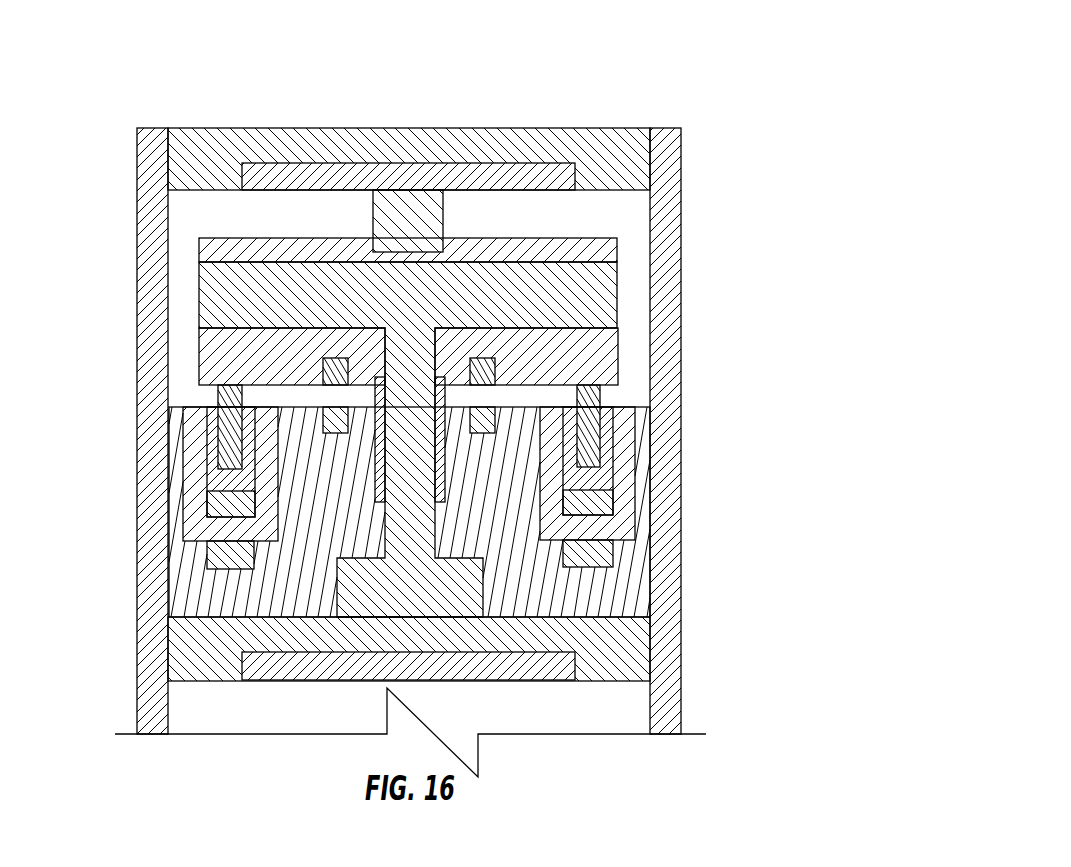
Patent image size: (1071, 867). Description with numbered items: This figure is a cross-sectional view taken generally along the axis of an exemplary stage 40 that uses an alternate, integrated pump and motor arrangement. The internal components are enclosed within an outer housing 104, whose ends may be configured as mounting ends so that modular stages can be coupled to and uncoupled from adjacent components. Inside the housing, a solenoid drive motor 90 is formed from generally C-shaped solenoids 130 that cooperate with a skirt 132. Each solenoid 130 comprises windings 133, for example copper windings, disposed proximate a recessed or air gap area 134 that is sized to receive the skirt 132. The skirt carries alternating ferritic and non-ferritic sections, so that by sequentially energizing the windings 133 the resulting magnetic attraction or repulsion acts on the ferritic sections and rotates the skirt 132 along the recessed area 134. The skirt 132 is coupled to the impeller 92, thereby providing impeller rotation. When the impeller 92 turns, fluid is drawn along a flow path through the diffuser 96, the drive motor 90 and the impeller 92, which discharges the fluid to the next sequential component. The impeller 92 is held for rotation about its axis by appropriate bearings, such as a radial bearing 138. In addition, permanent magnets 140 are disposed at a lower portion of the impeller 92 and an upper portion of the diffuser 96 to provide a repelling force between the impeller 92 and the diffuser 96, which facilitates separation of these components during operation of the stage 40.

The stage 40 is at (676, 109).
The drive motor 90 is at (128, 443).
The impeller 92 is at (611, 362).
The diffuser 96 is at (628, 587).
The outer housing 104 is at (374, 431).
The solenoids 130 is at (611, 528).
The skirt 132 is at (590, 426).
The windings 133 is at (201, 505).
The recessed or air gap area 134 is at (605, 452).
The radial bearing 138 is at (449, 218).
The permanent magnets 140 is at (504, 420).